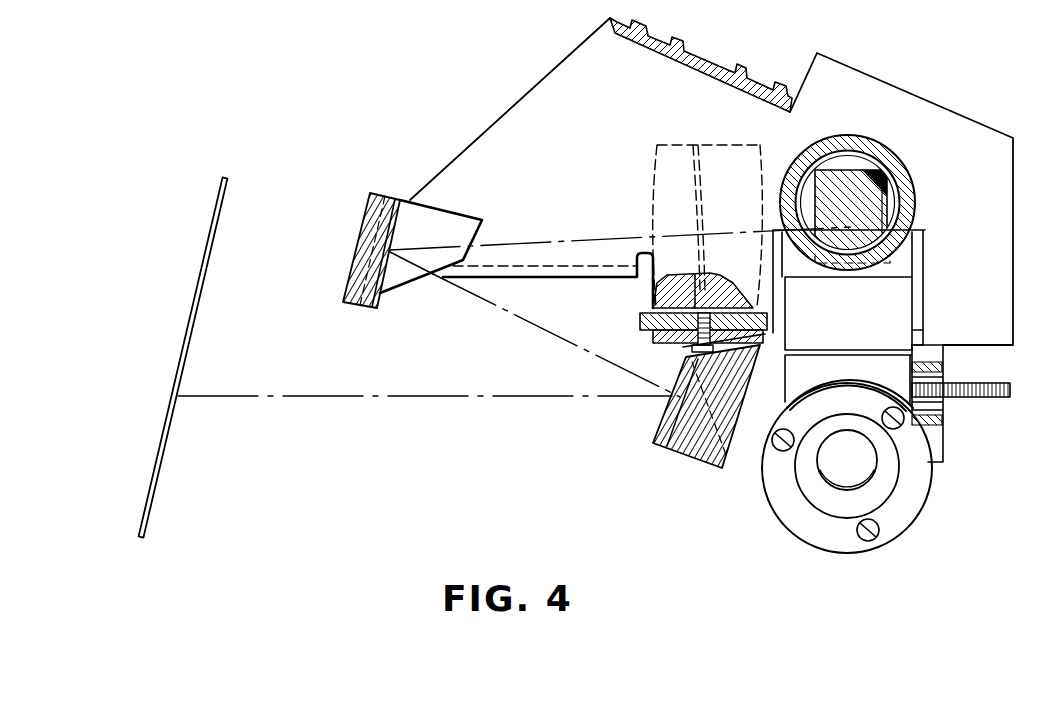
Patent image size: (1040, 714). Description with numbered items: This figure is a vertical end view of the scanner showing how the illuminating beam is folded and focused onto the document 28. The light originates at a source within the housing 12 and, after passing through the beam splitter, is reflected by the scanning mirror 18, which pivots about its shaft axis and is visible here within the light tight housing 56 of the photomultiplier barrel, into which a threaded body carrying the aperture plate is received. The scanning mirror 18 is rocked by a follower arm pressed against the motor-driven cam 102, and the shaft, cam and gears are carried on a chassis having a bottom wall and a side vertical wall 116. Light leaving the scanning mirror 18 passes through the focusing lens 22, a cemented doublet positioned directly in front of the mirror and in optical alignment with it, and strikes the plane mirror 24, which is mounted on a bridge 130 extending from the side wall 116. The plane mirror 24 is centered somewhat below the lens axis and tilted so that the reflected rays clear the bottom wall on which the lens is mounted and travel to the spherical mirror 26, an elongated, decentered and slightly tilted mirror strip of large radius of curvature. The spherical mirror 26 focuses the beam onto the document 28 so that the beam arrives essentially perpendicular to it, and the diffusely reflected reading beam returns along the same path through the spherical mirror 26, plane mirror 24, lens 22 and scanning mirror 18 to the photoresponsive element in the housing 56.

The side vertical wall 116 is at (613, 126).
The plane mirror 24 is at (391, 200).
The bridge 130 is at (363, 230).
The focusing lens 22 is at (683, 215).
The light tight housing 56 is at (905, 173).
The scanning mirror 18 is at (873, 218).
The cam 102 is at (977, 383).
The spherical mirror 26 is at (667, 425).
The housing 12 is at (912, 497).
The document 28 is at (153, 497).